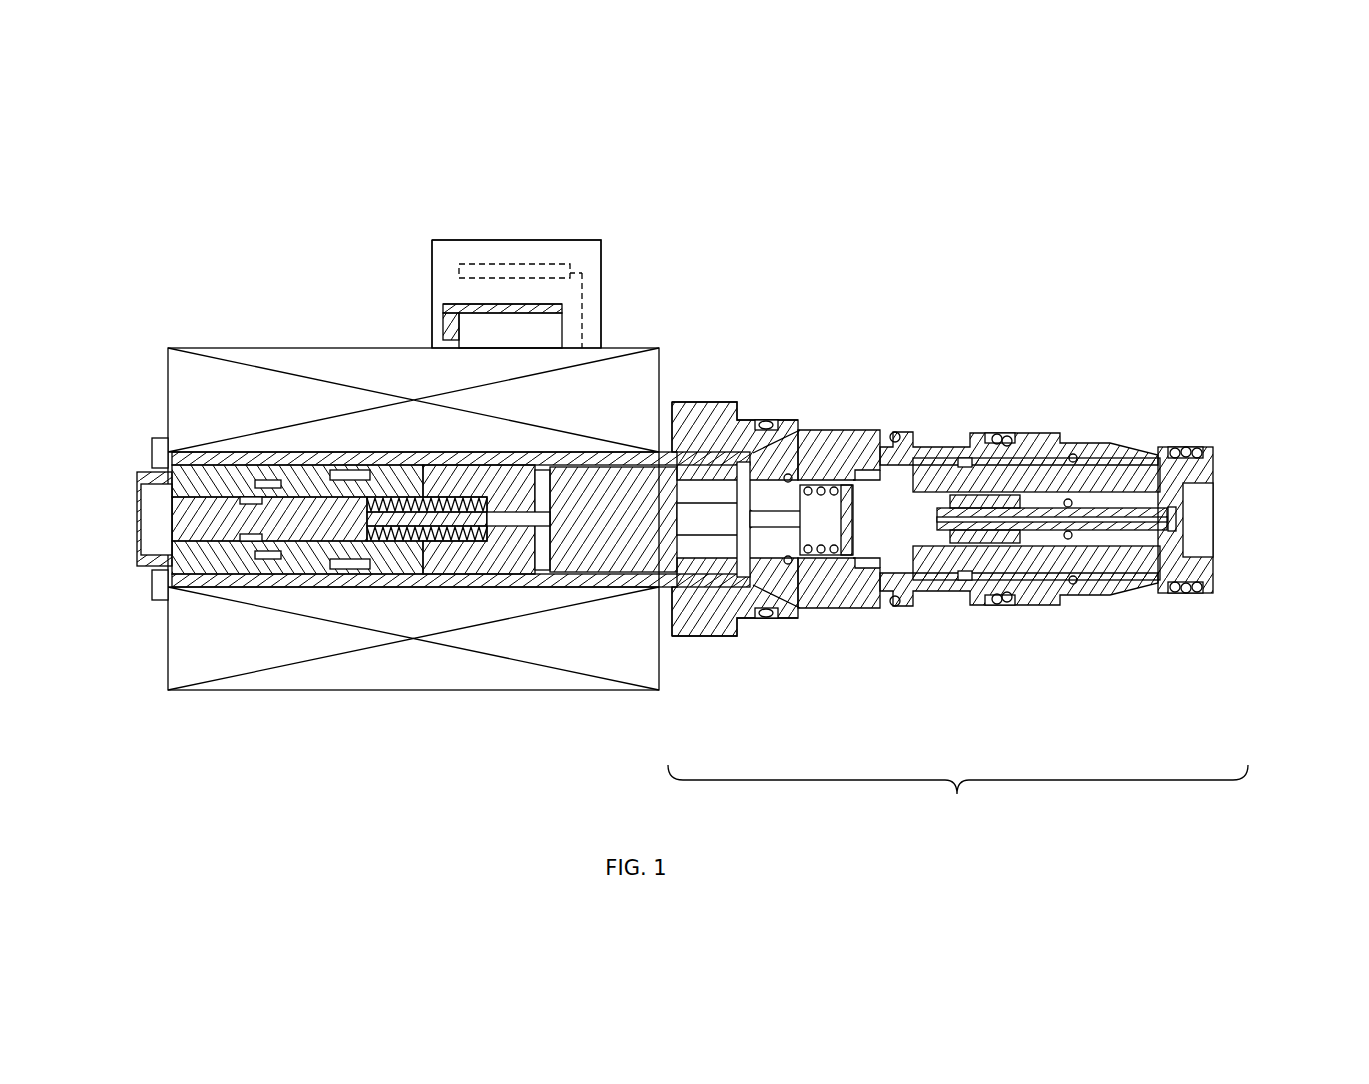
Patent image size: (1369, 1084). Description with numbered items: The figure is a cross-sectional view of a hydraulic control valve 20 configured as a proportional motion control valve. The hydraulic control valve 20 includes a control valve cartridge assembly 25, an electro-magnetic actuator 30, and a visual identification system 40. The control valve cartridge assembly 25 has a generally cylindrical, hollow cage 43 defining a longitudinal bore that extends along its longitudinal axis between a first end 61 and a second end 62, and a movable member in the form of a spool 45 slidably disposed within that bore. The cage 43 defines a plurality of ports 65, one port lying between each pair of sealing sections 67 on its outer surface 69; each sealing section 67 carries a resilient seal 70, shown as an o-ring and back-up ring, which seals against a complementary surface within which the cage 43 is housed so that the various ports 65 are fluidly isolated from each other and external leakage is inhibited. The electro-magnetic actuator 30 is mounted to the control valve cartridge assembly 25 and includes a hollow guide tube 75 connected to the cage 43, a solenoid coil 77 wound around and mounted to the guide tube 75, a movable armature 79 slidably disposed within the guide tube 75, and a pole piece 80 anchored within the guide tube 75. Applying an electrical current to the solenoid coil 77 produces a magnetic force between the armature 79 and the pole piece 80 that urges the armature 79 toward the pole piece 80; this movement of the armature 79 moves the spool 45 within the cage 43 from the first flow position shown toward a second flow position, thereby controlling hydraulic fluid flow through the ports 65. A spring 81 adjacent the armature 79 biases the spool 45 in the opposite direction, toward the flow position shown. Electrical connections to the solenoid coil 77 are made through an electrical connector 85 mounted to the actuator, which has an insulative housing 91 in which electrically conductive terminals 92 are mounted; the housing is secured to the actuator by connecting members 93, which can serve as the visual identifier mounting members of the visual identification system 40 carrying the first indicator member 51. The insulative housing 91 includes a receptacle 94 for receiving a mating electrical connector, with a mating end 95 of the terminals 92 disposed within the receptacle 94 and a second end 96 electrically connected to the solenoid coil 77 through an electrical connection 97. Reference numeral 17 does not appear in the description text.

The hydraulic control valve 20 is at (989, 206).
The control valve cartridge assembly 25 is at (958, 795).
The electro-magnetic actuator 30 is at (127, 405).
The visual identification system 40 is at (389, 313).
The cage 43 is at (712, 408).
The spool 45 is at (843, 620).
The first indicator member 51 is at (447, 328).
The first end 61 is at (665, 406).
The second end 62 is at (1257, 446).
The ports 65 is at (936, 413).
The sealing sections 67 is at (779, 630).
The outer surface 69 is at (793, 423).
The resilient seal 70 is at (755, 640).
The guide tube 75 is at (338, 573).
The solenoid coil 77 is at (303, 372).
The armature 79 is at (515, 573).
The pole piece 80 is at (370, 545).
The spring 81 is at (447, 548).
The electrical connector 85 is at (560, 166).
The insulative housing 91 is at (474, 240).
The electrically conductive terminals 92 is at (512, 264).
The connecting members 93 is at (555, 321).
The receptacle 94 is at (392, 276).
The mating end 95 is at (458, 270).
The second end 96 is at (572, 266).
The electrical connection 97 is at (586, 285).
The valve pin 17 is at (826, 470).